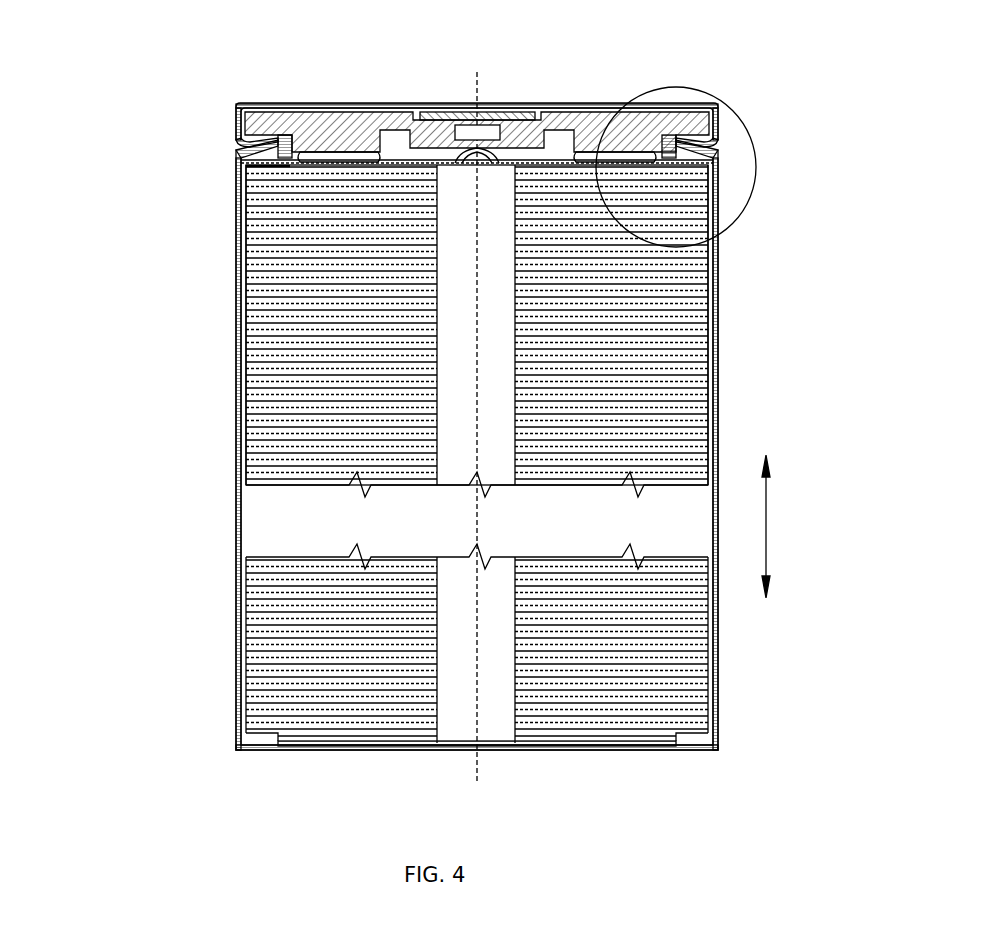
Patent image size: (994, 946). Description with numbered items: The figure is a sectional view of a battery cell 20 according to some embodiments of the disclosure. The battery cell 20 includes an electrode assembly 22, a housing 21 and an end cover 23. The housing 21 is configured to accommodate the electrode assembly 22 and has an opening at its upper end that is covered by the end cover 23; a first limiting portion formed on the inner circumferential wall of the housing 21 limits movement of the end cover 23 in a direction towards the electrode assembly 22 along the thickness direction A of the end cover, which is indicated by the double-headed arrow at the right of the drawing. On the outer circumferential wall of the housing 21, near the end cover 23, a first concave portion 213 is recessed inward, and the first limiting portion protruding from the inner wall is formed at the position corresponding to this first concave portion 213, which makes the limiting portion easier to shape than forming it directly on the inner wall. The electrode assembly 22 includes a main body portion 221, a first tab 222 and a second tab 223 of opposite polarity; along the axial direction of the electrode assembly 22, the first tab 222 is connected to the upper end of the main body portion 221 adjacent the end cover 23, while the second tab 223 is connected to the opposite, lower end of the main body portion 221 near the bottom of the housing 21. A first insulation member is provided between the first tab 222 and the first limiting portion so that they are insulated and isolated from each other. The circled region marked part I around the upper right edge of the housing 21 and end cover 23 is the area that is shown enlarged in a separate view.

The battery cell 20 is at (490, 36).
The housing 21 is at (718, 397).
The first concave portion 213 is at (258, 145).
The electrode assembly 22 is at (140, 150).
The main body portion 221 is at (276, 406).
The first tab 222 is at (250, 168).
The second tab 223 is at (340, 742).
The end cover 23 is at (400, 128).
The part I is at (753, 136).
The thickness direction A is at (757, 526).